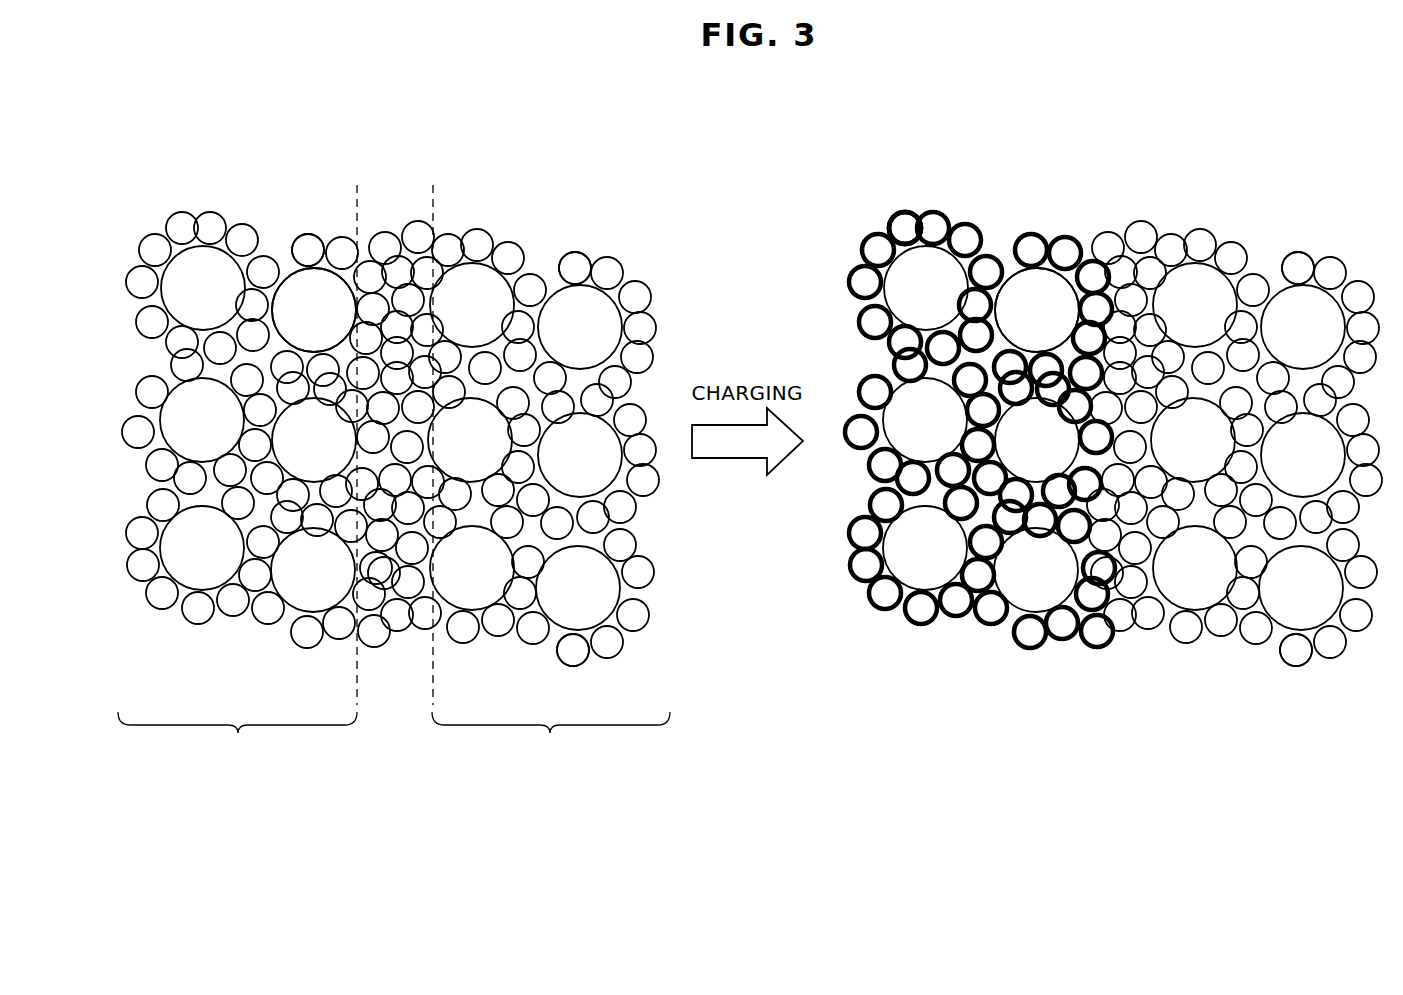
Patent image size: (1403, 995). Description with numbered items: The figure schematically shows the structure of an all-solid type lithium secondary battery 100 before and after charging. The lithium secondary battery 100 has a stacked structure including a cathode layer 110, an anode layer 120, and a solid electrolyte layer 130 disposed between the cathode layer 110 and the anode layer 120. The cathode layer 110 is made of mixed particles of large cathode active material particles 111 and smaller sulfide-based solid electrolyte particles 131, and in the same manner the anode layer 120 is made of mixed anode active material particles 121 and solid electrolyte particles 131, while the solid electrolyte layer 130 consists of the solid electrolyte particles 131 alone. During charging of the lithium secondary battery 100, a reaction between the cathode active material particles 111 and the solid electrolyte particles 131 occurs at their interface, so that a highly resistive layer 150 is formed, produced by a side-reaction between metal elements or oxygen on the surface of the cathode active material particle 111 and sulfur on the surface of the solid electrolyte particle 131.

The all-solid type lithium secondary battery 100 is at (650, 208).
The cathode layer 110 is at (237, 738).
The anode layer 120 is at (551, 738).
The solid electrolyte layer 130 is at (357, 184).
The cathode active material particle 111 is at (288, 264).
The anode active material particle 121 is at (557, 644).
The sulfide-based solid electrolyte particle 131 is at (307, 244).
The highly resistive layer 150 is at (907, 213).